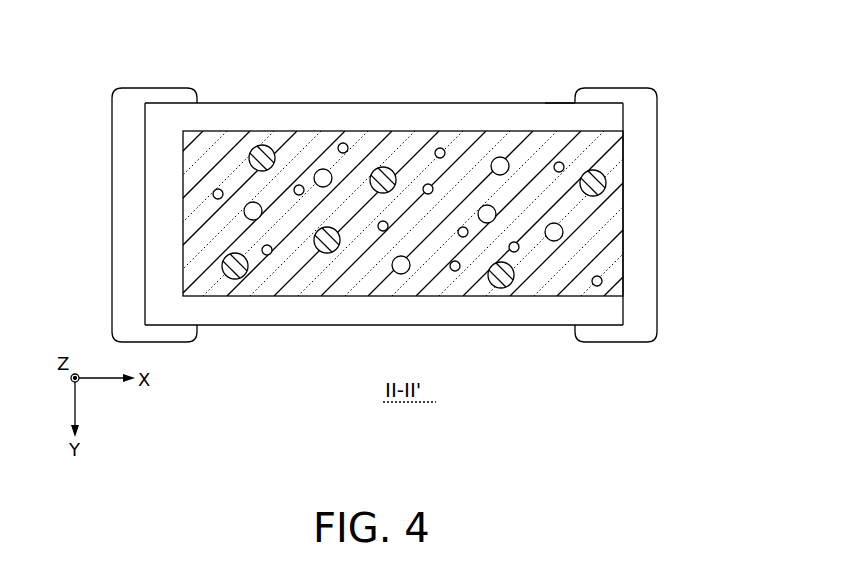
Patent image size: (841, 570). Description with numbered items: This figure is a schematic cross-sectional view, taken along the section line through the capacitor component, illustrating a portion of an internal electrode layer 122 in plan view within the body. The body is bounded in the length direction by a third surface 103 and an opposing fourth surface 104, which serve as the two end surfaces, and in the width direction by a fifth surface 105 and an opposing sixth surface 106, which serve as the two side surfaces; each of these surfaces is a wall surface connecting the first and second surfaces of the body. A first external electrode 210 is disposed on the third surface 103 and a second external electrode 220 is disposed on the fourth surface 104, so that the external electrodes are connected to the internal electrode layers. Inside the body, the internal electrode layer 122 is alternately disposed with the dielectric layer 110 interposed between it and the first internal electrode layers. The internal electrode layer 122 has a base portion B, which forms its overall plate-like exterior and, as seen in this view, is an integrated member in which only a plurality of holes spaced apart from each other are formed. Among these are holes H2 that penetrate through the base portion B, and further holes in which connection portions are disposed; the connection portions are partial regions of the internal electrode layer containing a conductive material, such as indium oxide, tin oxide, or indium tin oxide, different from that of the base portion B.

The dielectric layer 110 is at (384, 213).
The third surface 103 is at (145, 154).
The fourth surface 104 is at (623, 155).
The fifth surface 105 is at (262, 325).
The sixth surface 106 is at (244, 103).
The second internal electrode layer 122 is at (557, 106).
The first external electrode 210 is at (118, 94).
The second external electrode 220 is at (640, 97).
The base portion B is at (395, 152).
The hole H2 is at (343, 143).